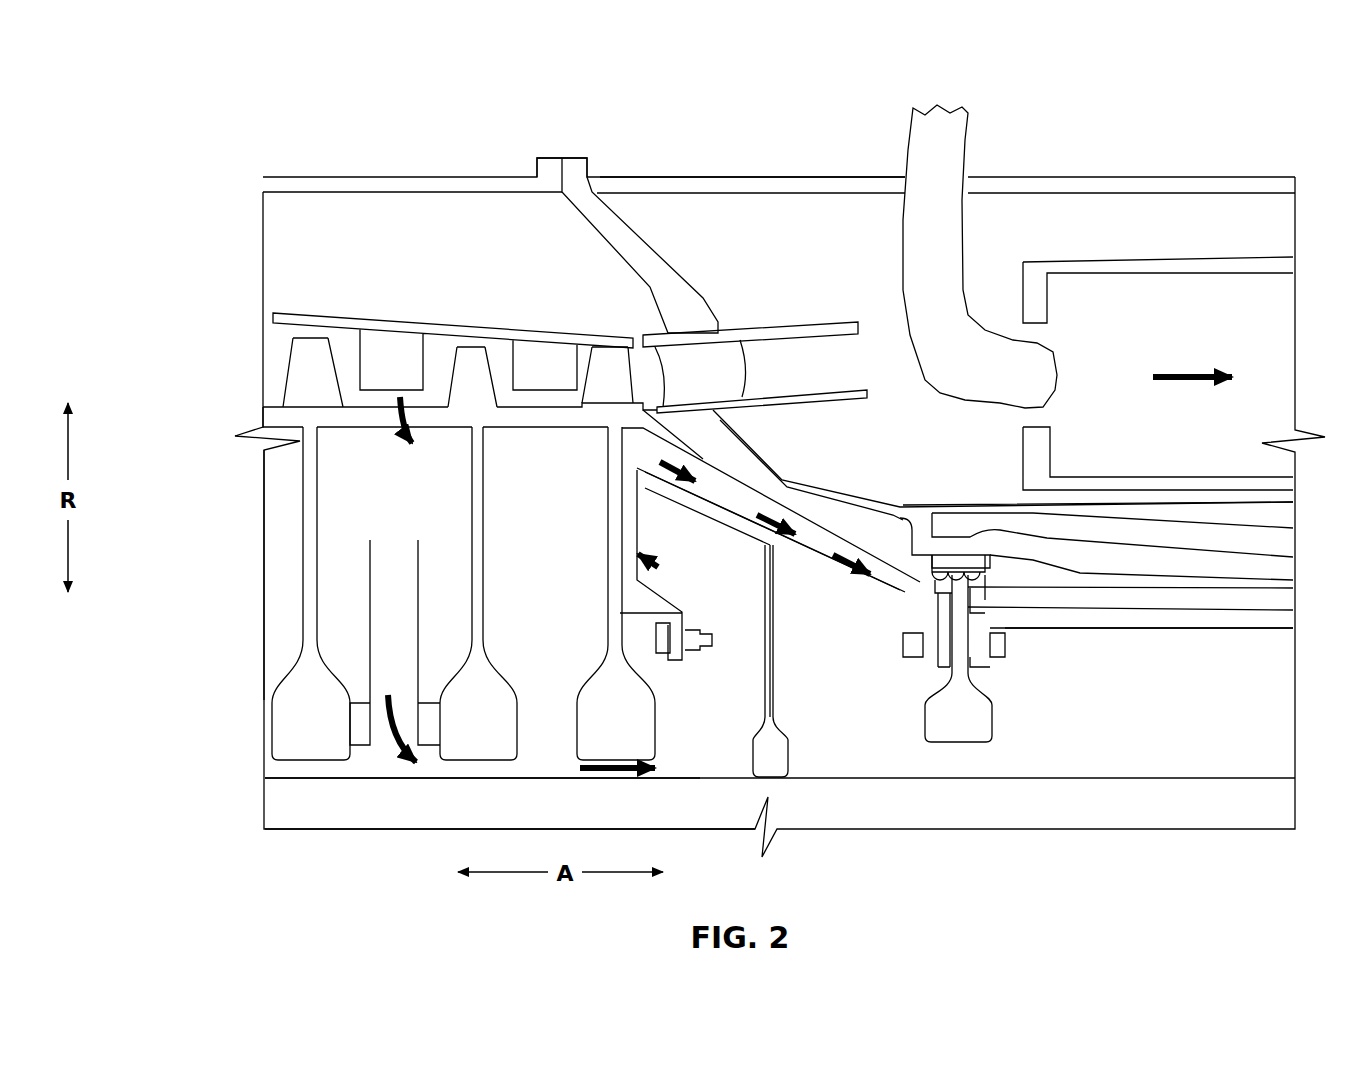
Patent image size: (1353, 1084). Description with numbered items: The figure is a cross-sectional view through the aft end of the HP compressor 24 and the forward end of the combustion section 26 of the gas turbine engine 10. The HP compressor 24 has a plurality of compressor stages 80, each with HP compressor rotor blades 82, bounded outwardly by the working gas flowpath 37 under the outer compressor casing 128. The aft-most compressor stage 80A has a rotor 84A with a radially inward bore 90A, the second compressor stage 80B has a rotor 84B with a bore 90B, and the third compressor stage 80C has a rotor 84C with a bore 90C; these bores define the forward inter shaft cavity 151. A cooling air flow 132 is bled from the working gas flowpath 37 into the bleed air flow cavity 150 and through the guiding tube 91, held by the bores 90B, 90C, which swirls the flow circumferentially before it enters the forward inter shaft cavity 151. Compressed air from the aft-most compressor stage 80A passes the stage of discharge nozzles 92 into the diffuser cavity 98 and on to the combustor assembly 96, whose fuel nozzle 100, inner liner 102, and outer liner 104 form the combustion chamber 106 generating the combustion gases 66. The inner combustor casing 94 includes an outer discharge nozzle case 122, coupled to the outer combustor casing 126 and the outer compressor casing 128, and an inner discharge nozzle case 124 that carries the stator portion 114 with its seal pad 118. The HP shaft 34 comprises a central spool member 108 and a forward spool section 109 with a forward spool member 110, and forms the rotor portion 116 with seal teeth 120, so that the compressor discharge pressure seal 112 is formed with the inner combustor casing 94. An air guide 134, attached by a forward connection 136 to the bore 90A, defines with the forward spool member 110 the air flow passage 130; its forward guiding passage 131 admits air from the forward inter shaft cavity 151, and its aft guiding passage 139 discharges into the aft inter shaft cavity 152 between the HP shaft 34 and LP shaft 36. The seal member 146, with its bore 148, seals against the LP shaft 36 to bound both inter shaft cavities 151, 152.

The gas turbine engine 10 is at (1232, 76).
The HP compressor 24 is at (355, 237).
The combustion section 26 is at (1057, 140).
The HP shaft 34 is at (1133, 670).
The LP shaft 36 is at (1258, 777).
The working gas flowpath 37 is at (433, 343).
The combustion gases 66 is at (1208, 386).
The compressor stages 80 is at (434, 325).
The aft-most compressor stage 80A is at (600, 380).
The second compressor stage 80B is at (470, 360).
The third compressor stage 80C is at (300, 378).
The HP compressor rotor blades 82 is at (617, 393).
The rotor of aft-most compressor stage 84A is at (587, 520).
The rotor of second compressor stage 84B is at (463, 563).
The rotor of third compressor stage 84C is at (288, 575).
The bore of aft-most compressor stage 90A is at (610, 597).
The bore of second compressor stage 90B is at (470, 630).
The bore of third compressor stage 90C is at (303, 633).
The guiding tube 91 is at (367, 577).
The stage of discharge nozzles 92 is at (727, 363).
The inner combustor casing 94 is at (878, 437).
The combustor assembly 96 is at (1042, 256).
The diffuser cavity 98 is at (922, 460).
The fuel nozzle 100 is at (1032, 370).
The inner liner 102 is at (1268, 497).
The outer liner 104 is at (1188, 257).
The combustion chamber 106 is at (1200, 334).
The central spool member 108 is at (1218, 632).
The forward spool section 109 is at (852, 527).
The forward spool member 110 is at (727, 470).
The compressor discharge pressure seal 112 is at (997, 597).
The stator portion 114 is at (975, 535).
The rotor portion 116 is at (988, 620).
The seal pad 118 is at (912, 563).
The seal teeth 120 is at (985, 575).
The outer discharge nozzle case 122 is at (632, 243).
The inner discharge nozzle case 124 is at (773, 463).
The outer combustor casing 126 is at (718, 178).
The outer compressor casing 128 is at (455, 177).
The air flow passage 130 is at (738, 513).
The forward guiding passage 131 is at (650, 550).
The cooling air flow 132 is at (403, 438).
The air guide 134 is at (765, 545).
The forward connection 136 is at (695, 663).
The aft guiding passage 139 is at (917, 670).
The seal member 146 is at (785, 648).
The bore of seal member 148 is at (775, 703).
The bleed air flow cavity 150 is at (413, 504).
The forward inter shaft cavity 151 is at (706, 757).
The aft inter shaft cavity 152 is at (890, 772).